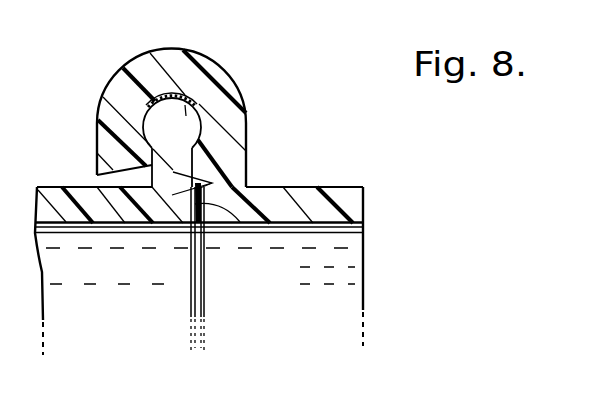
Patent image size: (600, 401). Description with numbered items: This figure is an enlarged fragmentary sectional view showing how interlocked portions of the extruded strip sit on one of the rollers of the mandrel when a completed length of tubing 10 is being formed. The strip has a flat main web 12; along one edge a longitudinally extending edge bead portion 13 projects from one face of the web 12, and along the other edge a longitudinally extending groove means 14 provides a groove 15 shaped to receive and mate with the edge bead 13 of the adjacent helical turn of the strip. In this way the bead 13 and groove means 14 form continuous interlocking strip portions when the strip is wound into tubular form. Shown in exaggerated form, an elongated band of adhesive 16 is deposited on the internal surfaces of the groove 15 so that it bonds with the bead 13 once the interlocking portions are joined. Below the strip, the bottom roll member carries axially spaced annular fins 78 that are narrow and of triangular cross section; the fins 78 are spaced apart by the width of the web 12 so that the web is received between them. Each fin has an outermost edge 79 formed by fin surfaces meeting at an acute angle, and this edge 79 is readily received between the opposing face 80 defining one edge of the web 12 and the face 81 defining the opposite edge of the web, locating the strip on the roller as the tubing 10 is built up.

The tubing 10 is at (378, 188).
The flat main web 12 is at (313, 196).
The edge bead portion 13 is at (185, 112).
The groove means 14 is at (182, 67).
The groove 15 is at (187, 127).
The band of adhesive 16 is at (193, 147).
The fin 78 is at (202, 297).
The outermost edge 79 is at (194, 181).
The face 80 is at (173, 172).
The face 81 is at (200, 188).